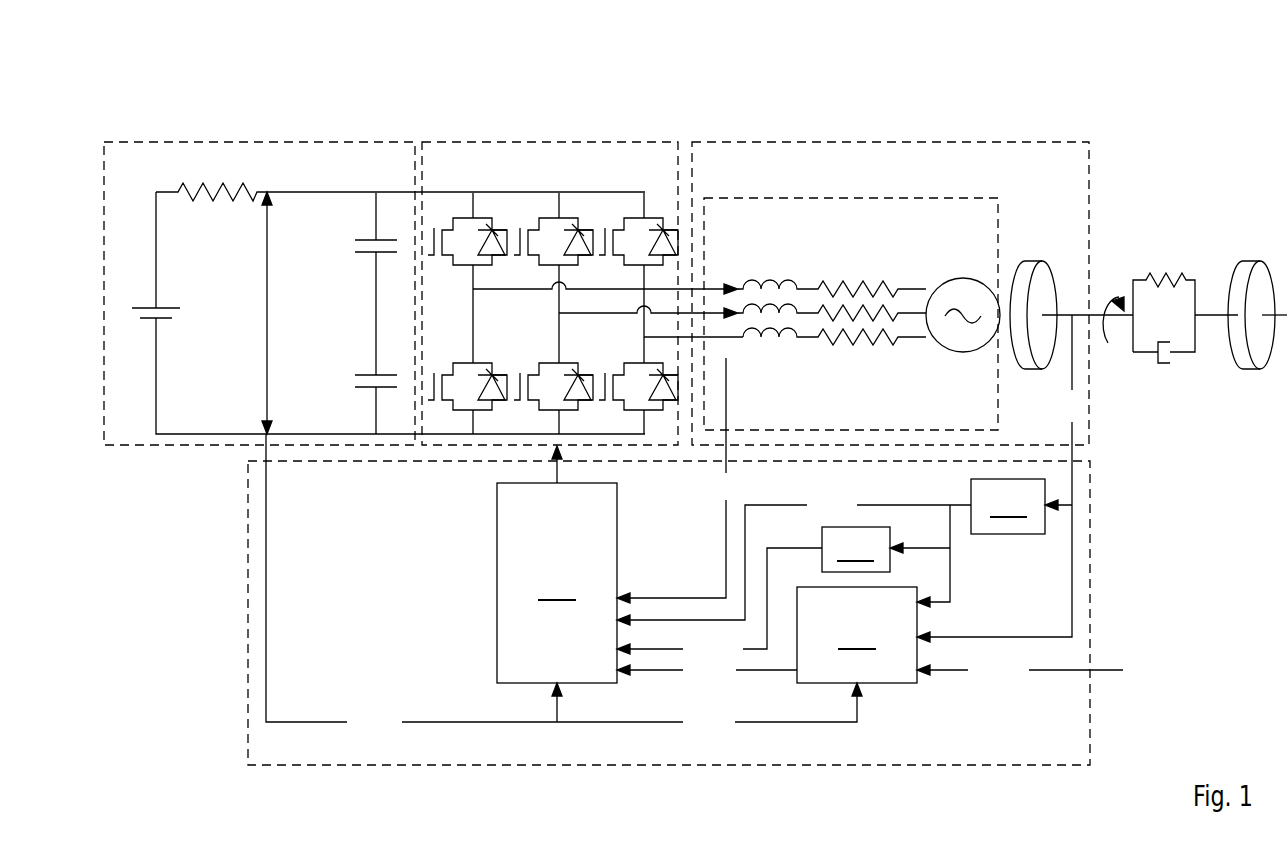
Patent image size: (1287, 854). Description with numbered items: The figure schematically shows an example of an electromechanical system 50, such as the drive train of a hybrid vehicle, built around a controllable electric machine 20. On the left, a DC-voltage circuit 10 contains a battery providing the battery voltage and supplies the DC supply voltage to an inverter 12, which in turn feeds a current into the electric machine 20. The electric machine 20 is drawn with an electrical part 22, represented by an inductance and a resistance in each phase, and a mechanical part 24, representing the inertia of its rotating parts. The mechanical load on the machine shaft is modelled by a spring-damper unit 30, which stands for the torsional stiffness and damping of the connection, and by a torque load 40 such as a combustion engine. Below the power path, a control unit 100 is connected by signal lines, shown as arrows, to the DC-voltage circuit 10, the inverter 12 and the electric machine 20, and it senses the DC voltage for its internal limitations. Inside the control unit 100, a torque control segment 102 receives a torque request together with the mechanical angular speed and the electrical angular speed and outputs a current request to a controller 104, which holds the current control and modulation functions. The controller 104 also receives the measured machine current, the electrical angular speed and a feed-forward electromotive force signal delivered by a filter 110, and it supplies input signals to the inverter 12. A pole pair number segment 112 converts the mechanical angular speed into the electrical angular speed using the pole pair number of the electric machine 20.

The DC-voltage circuit 10 is at (264, 140).
The inverter 12 is at (556, 140).
The electric machine 20 is at (883, 140).
The electrical part 22 is at (852, 198).
The mechanical part 24 is at (1031, 262).
The spring-damper unit 30 is at (1162, 250).
The torque load 40 is at (1250, 246).
The electromechanical system 50 is at (1062, 104).
The control unit 100 is at (626, 540).
The torque control segment 102 is at (857, 635).
The controller 104 is at (557, 583).
The filter 110 is at (856, 549).
The pole pair number segment 112 is at (1008, 506).